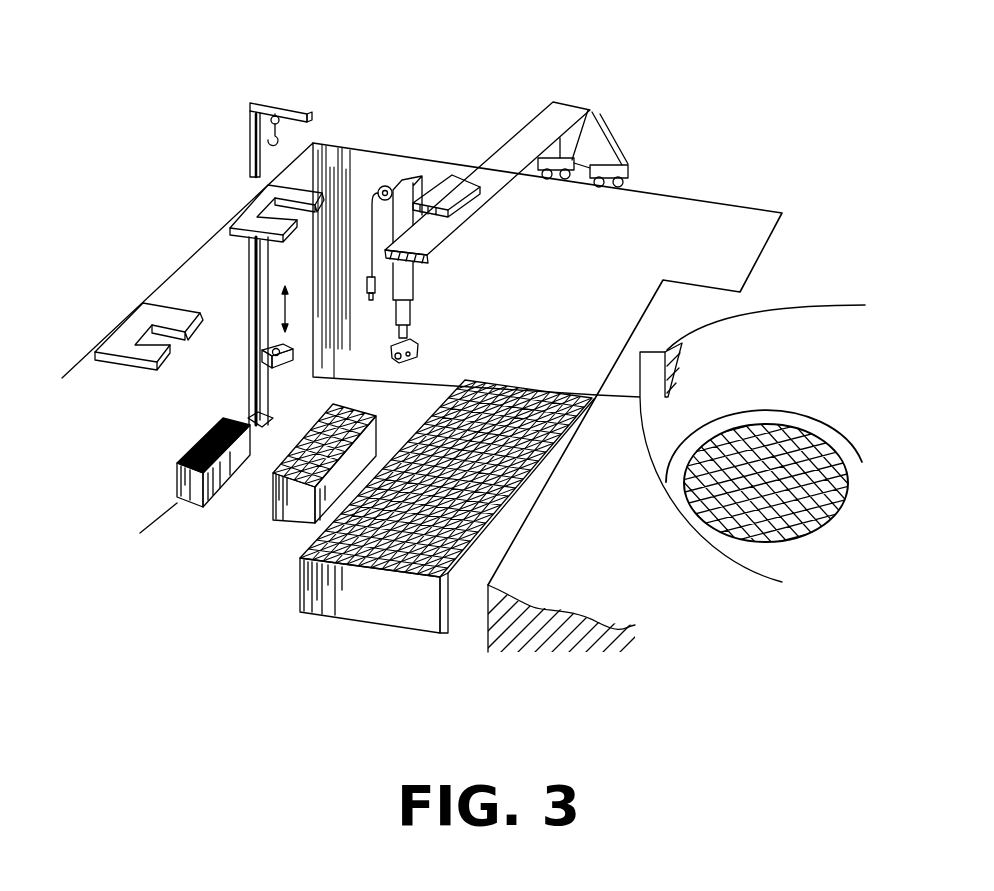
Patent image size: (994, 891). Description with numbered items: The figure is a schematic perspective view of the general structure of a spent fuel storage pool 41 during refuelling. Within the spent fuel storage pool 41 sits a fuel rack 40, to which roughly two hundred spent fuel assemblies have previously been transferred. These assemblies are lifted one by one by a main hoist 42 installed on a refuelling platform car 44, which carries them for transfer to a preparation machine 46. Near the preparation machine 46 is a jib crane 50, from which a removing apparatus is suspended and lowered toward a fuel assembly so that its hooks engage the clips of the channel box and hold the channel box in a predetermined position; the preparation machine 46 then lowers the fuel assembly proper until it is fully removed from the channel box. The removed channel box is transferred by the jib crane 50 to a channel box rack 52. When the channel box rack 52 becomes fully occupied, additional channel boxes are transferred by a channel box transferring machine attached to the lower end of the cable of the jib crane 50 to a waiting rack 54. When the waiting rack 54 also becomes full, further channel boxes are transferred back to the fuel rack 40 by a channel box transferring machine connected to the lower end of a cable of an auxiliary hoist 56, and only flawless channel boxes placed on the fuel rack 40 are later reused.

The fuel rack 40 is at (353, 636).
The spent fuel storage pool 41 is at (708, 220).
The main hoist 42 is at (412, 317).
The refuelling platform car 44 is at (567, 104).
The preparation machine 46 is at (262, 350).
The jib crane 50 is at (290, 137).
The channel box rack 52 is at (180, 449).
The waiting rack 54 is at (282, 535).
The auxiliary hoist 56 is at (372, 238).